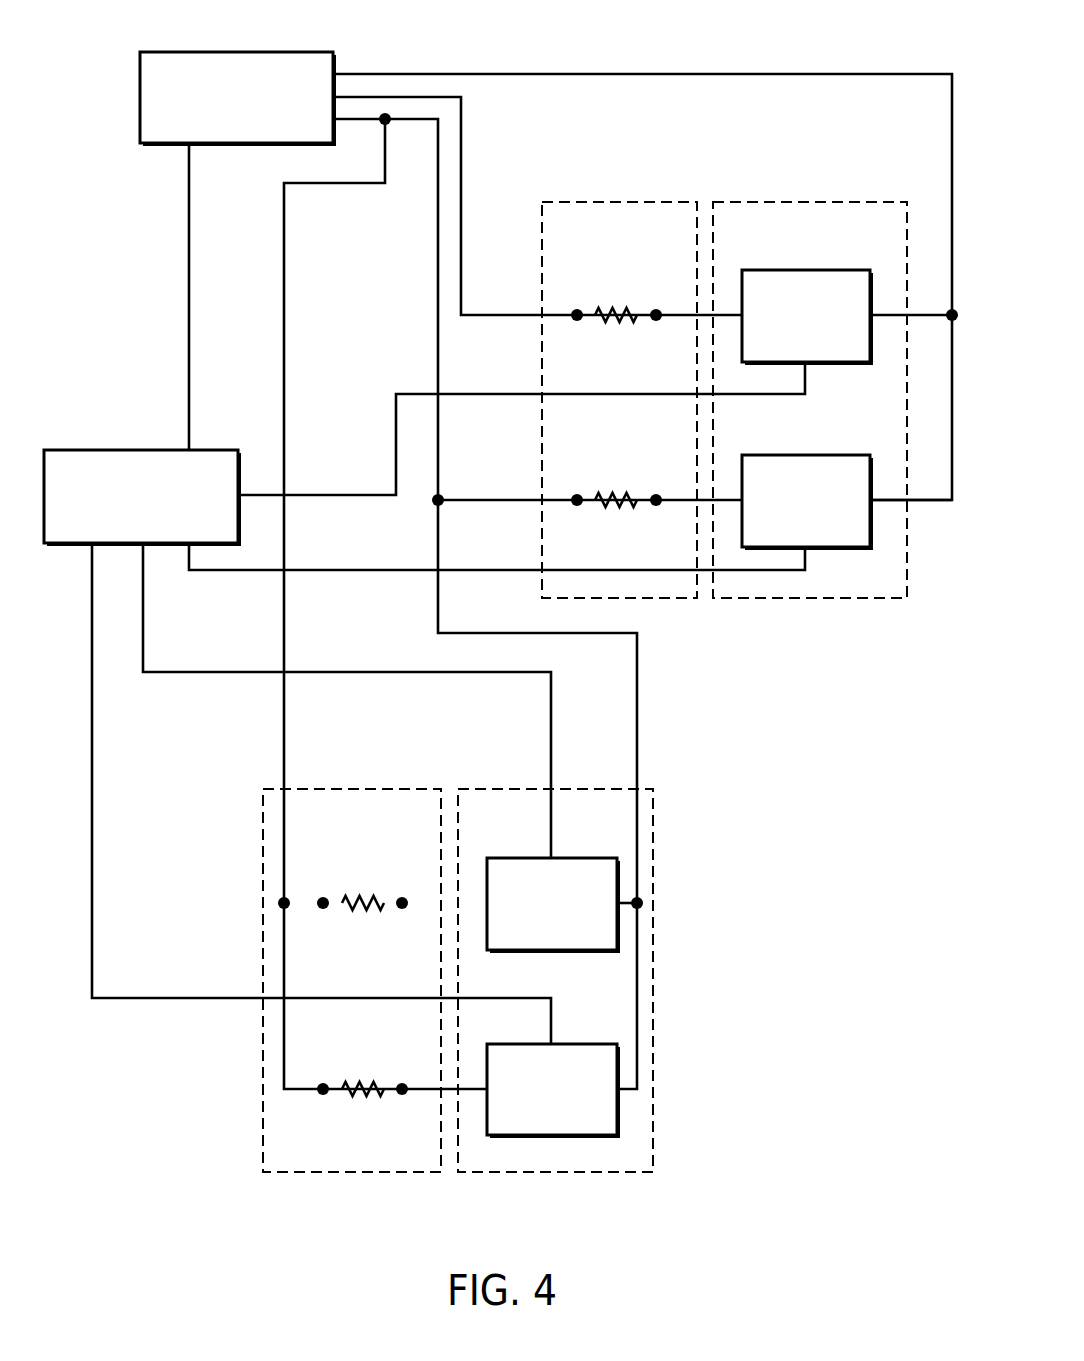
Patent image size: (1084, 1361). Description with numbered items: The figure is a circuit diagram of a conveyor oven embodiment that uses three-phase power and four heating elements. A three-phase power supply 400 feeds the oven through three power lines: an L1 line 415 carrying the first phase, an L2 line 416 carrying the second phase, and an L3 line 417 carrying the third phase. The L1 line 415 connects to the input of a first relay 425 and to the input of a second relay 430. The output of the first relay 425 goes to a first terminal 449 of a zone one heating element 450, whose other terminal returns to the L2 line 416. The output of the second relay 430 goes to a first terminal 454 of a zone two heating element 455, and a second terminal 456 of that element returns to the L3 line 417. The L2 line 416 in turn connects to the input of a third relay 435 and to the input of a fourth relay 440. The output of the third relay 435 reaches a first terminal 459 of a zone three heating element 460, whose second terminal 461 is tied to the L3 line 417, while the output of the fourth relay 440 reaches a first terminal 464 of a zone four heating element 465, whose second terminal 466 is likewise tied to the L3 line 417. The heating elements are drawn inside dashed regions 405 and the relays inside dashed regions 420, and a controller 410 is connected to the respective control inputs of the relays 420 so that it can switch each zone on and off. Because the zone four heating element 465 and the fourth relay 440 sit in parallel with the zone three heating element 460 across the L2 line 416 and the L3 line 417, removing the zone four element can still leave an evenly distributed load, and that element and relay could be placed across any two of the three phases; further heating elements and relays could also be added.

The three-phase power supply 400 is at (140, 97).
The sensing unit (dashed region) 405 is at (621, 200).
The controller 410 is at (92, 450).
The L1 line 415 is at (497, 74).
The L2 line 416 is at (497, 315).
The L3 line 417 is at (437, 268).
The relays 420 is at (811, 200).
The first relay 425 is at (805, 270).
The second relay 430 is at (805, 455).
The third relay 435 is at (584, 858).
The fourth relay 440 is at (584, 1044).
The first terminal 449 is at (655, 313).
The zone 1 heating element 450 is at (576, 313).
The first terminal 454 is at (655, 498).
The zone 2 heating element 455 is at (617, 508).
The second terminal 456 is at (576, 498).
The first terminal 459 is at (401, 1088).
The zone 3 heating element 460 is at (365, 1097).
The second terminal 461 is at (322, 1088).
The first terminal 464 is at (401, 901).
The zone 4 heating element 465 is at (365, 911).
The second terminal 466 is at (322, 901).